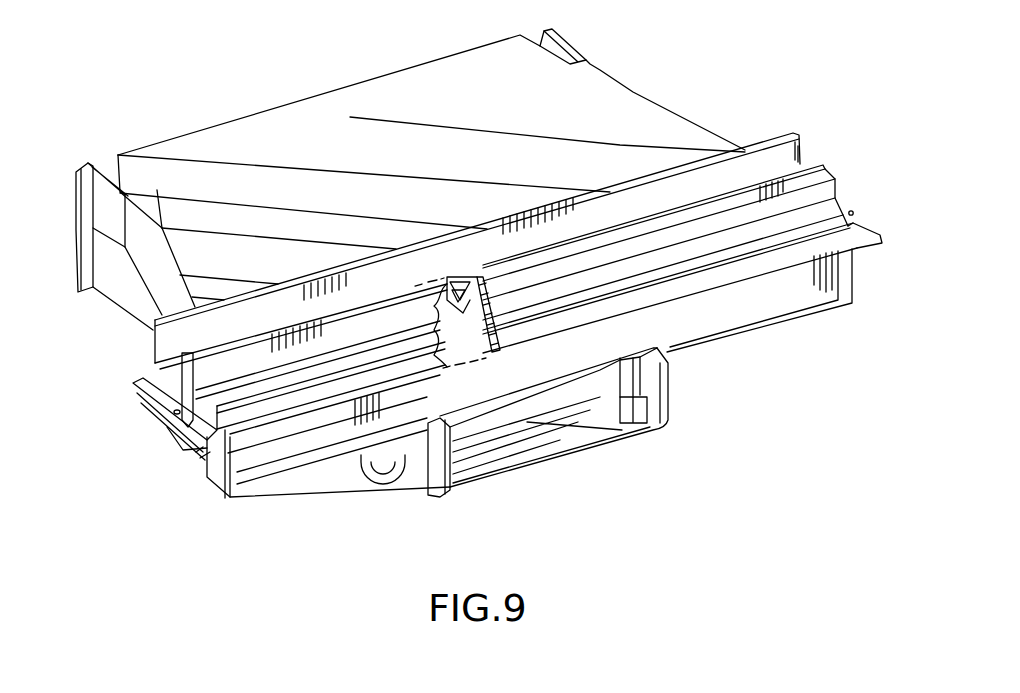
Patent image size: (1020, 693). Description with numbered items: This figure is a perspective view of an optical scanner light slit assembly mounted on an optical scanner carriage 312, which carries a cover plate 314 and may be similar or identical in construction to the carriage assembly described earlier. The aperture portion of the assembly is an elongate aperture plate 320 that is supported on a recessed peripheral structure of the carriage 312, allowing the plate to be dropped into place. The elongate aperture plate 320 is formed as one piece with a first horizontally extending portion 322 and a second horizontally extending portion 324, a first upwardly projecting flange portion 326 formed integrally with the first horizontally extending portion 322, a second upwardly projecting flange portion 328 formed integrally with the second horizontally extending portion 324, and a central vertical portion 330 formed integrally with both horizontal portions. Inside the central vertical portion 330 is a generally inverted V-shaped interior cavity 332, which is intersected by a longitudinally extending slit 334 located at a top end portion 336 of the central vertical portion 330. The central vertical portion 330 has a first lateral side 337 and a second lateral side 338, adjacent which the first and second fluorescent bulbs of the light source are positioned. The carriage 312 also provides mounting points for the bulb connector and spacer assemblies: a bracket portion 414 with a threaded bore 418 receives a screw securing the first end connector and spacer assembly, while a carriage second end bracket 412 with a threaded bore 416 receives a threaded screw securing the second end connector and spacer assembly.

The optical scanner carriage 312 is at (692, 111).
The cover plate 314 is at (577, 88).
The elongate aperture plate 320 is at (849, 162).
The first horizontally extending portion 322 is at (153, 375).
The second horizontally extending portion 324 is at (187, 450).
The first upwardly projecting flange portion 326 is at (153, 373).
The second upwardly projecting flange portion 328 is at (250, 420).
The central vertical portion 330 is at (167, 383).
The inverted V-shaped interior cavity 332 is at (453, 277).
The longitudinally extending slit 334 is at (373, 300).
The top end portion 336 is at (243, 360).
The first lateral side 337 is at (470, 277).
The second lateral side 338 is at (528, 300).
The carriage second end bracket 412 is at (879, 231).
The bracket portion 414 is at (203, 437).
The threaded bore 416 is at (875, 196).
The threaded bore 418 is at (167, 430).